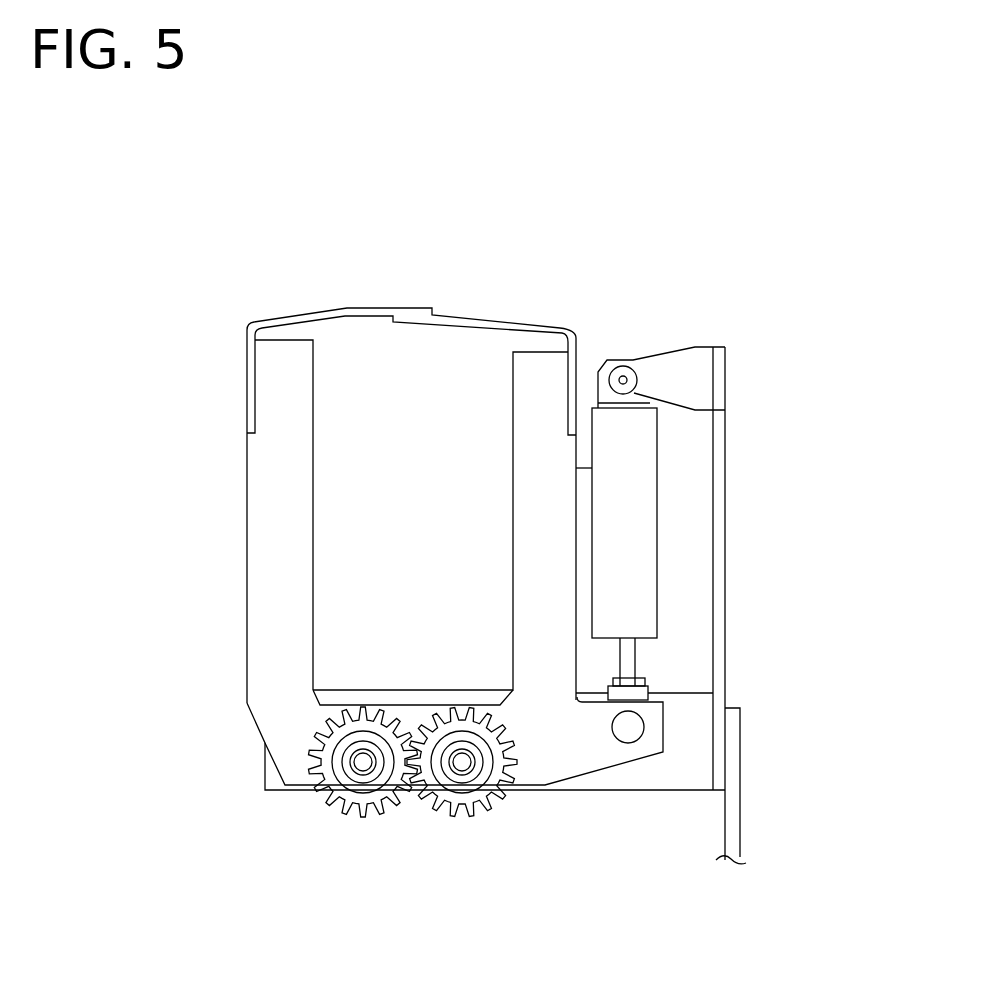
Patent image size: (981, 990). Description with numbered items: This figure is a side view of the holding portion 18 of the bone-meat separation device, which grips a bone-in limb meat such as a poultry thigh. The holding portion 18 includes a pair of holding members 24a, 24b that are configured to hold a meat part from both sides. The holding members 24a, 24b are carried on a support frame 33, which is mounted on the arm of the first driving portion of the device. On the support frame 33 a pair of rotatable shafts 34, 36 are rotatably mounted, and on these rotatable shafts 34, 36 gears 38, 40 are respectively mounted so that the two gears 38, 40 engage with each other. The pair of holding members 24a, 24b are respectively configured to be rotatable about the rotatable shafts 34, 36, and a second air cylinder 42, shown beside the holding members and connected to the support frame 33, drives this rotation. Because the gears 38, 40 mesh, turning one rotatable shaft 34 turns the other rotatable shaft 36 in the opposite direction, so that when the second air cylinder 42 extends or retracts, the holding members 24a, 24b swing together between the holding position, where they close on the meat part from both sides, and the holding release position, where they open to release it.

The holding portion 18 is at (470, 290).
The holding member 24a is at (528, 510).
The holding member 24b is at (255, 460).
The support frame 33 is at (647, 785).
The rotatable shaft 34 is at (482, 793).
The rotatable shaft 36 is at (363, 765).
The gear 38 is at (462, 765).
The gear 40 is at (387, 803).
The second air cylinder 42 is at (648, 498).